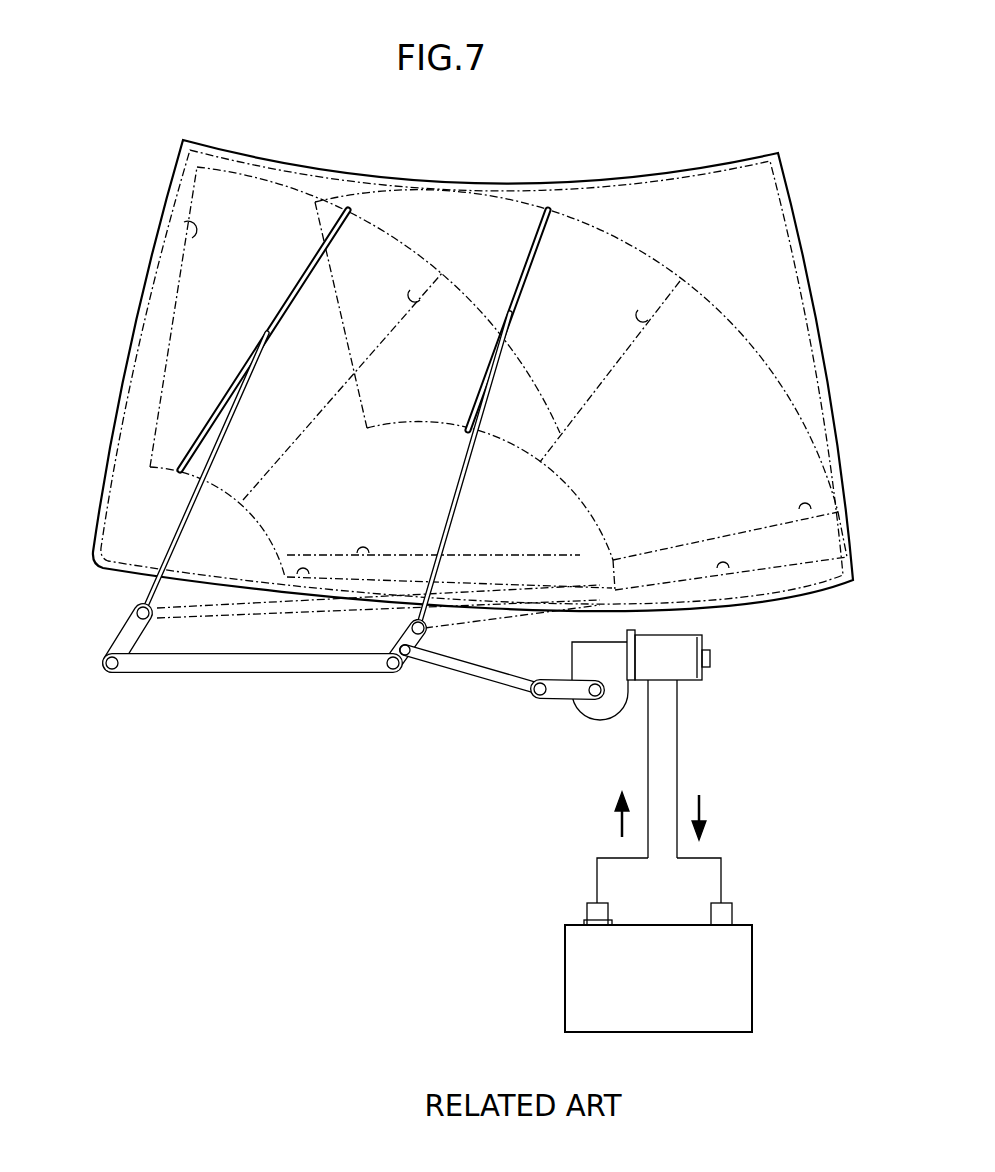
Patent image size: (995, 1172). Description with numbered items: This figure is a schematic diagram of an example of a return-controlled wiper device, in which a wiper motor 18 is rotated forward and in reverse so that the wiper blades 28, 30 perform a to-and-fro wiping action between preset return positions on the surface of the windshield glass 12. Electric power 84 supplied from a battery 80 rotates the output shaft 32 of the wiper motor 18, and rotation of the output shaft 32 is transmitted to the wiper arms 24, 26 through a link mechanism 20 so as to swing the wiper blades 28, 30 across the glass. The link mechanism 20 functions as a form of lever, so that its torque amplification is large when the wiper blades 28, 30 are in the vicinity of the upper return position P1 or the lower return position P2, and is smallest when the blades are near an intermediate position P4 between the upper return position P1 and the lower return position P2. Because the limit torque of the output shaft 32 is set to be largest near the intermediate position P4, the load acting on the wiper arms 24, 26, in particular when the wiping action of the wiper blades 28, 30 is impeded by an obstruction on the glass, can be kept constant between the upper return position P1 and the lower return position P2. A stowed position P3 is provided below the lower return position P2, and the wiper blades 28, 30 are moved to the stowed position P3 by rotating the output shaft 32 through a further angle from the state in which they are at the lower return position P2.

The windshield glass 12 is at (568, 182).
The wiper motor 18 is at (697, 681).
The link mechanism 20 is at (383, 688).
The wiper arm 24 is at (455, 513).
The wiper arm 26 is at (187, 513).
The wiper blade 28 is at (538, 226).
The wiper blade 30 is at (284, 303).
The output shaft 32 is at (596, 698).
The battery 80 is at (752, 958).
The power 84 is at (612, 822).
The upper return position P1 is at (186, 222).
The lower return position P2 is at (364, 559).
The stowed position P3 is at (302, 580).
The intermediate position P4 is at (416, 295).